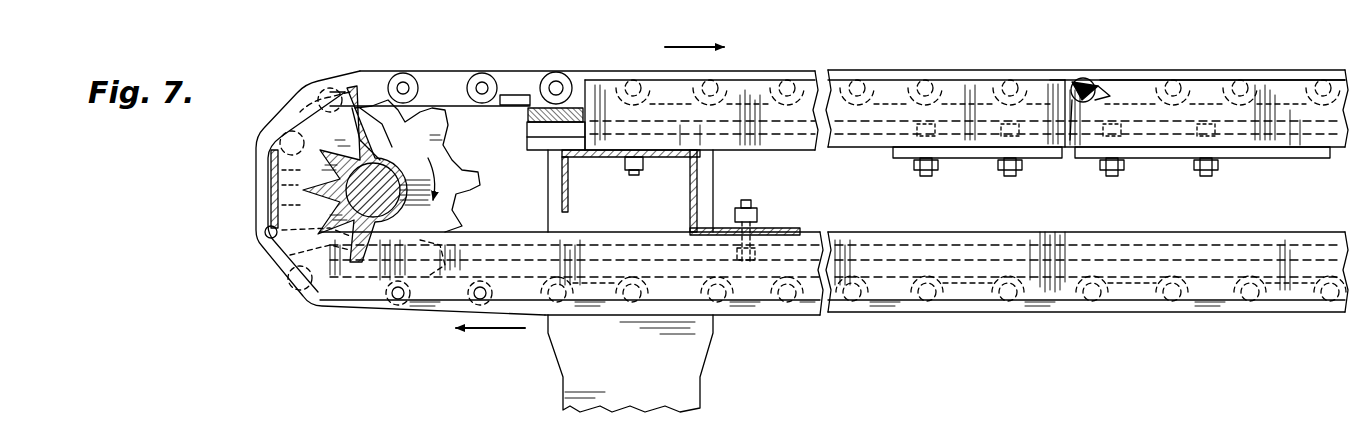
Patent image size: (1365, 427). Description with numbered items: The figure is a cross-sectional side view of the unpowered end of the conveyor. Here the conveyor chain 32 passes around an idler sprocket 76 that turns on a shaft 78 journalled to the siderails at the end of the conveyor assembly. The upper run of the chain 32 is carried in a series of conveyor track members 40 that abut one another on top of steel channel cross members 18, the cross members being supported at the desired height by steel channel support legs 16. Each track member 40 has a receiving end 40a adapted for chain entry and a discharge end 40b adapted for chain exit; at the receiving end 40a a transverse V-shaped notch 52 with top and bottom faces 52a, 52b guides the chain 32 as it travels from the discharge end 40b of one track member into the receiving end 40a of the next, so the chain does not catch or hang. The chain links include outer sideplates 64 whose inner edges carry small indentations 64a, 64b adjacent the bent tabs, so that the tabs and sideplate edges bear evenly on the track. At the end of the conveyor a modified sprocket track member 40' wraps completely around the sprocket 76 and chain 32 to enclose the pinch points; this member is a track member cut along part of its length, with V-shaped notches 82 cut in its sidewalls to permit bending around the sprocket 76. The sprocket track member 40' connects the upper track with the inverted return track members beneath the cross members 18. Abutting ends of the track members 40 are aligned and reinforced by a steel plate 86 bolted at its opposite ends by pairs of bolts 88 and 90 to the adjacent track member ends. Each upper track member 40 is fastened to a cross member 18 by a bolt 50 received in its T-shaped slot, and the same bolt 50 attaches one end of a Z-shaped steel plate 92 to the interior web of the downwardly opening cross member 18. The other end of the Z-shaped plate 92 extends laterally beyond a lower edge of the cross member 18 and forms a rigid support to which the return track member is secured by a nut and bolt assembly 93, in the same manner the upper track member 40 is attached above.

The support legs 16 is at (676, 388).
The cross members 18 is at (563, 176).
The conveyor chain 32 is at (440, 70).
The conveyor track members 40 is at (1087, 86).
The sprocket track member 40' is at (254, 184).
The receiving end 40a is at (1138, 76).
The discharge end 40b is at (1076, 84).
The bolt 50 is at (633, 172).
The V-shaped notch 52 is at (1083, 88).
The top face 52a is at (1098, 96).
The bottom face 52b is at (1086, 102).
The outer sideplate 64 is at (522, 80).
The indentation 64a is at (500, 90).
The indentation 64b is at (540, 88).
The idler sprocket 76 is at (387, 226).
The shaft 78 is at (367, 243).
The V-shaped notches 82 is at (314, 200).
The steel plate 86 is at (1092, 160).
The bolts 88 is at (1008, 176).
The bolts 90 is at (1200, 176).
The Z-shaped steel plate 92 is at (688, 218).
The nut and bolt assembly 93 is at (748, 206).